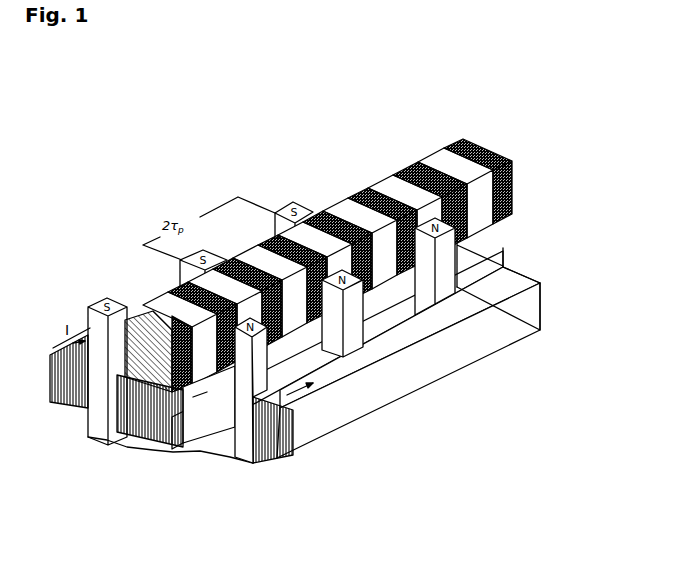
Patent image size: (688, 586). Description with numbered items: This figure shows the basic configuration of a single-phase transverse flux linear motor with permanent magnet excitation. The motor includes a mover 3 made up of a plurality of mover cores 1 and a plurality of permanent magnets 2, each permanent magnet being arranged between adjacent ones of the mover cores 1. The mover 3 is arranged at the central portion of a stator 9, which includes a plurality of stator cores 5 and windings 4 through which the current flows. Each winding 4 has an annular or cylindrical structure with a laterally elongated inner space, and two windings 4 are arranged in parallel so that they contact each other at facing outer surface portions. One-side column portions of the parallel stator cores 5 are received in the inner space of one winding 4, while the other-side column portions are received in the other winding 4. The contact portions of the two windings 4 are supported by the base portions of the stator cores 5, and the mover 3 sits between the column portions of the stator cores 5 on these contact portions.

The mover cores 1 is at (442, 167).
The permanent magnets 2 is at (375, 190).
The mover 3 is at (503, 250).
The windings 4 is at (302, 428).
The stator cores 5 is at (537, 333).
The stator 9 is at (100, 397).